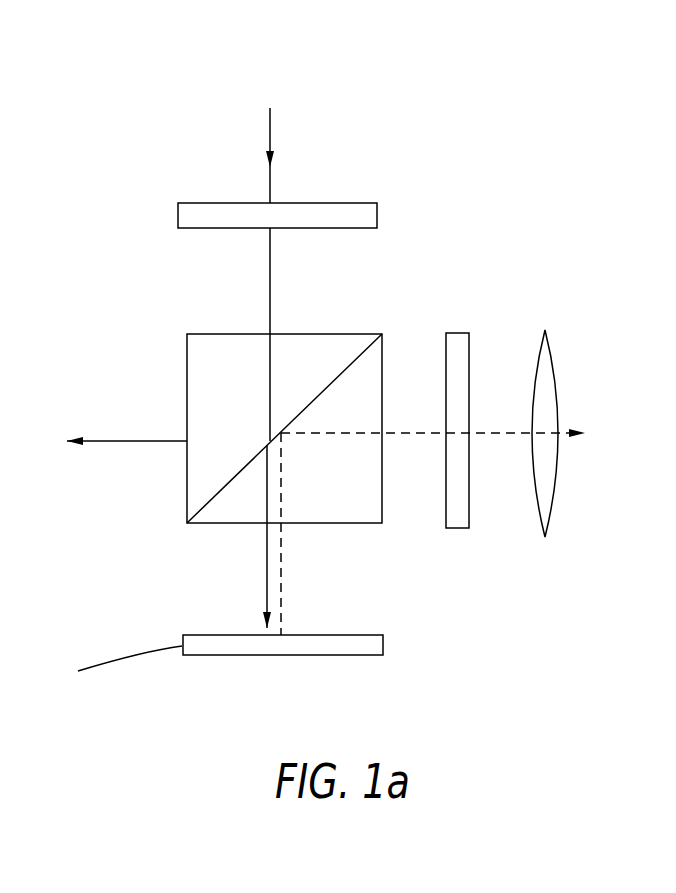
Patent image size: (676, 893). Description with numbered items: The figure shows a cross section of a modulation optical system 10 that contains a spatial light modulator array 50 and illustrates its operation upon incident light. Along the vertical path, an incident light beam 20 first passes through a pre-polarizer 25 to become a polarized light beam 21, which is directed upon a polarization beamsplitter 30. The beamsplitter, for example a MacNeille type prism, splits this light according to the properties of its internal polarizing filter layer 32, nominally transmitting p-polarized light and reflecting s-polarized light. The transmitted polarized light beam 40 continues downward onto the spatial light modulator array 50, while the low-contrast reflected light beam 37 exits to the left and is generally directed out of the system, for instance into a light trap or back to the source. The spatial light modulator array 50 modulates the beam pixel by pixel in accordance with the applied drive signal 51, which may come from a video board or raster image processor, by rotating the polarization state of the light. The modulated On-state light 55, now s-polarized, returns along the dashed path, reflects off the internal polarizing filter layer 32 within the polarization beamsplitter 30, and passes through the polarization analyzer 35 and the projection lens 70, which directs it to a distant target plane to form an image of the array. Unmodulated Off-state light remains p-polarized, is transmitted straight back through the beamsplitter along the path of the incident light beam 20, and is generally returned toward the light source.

The modulation optical system 10 is at (200, 152).
The incident light beam 20 is at (272, 137).
The pre-polarizer 25 is at (377, 217).
The polarized light beam 21 is at (272, 268).
The polarization beamsplitter 30 is at (223, 337).
The internal polarizing filter layer 32 is at (305, 402).
The reflected light beam 37 is at (142, 441).
The transmitted polarized light beam 40 is at (265, 553).
The modulated On-state light 55 is at (280, 553).
The polarization analyzer 35 is at (470, 528).
The projection lens 70 is at (552, 508).
The spatial light modulator array 50 is at (305, 655).
The drive signal 51 is at (137, 655).